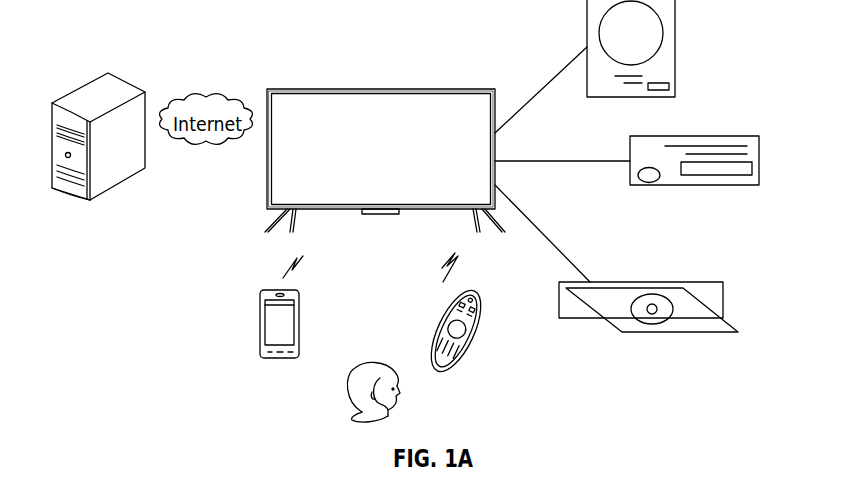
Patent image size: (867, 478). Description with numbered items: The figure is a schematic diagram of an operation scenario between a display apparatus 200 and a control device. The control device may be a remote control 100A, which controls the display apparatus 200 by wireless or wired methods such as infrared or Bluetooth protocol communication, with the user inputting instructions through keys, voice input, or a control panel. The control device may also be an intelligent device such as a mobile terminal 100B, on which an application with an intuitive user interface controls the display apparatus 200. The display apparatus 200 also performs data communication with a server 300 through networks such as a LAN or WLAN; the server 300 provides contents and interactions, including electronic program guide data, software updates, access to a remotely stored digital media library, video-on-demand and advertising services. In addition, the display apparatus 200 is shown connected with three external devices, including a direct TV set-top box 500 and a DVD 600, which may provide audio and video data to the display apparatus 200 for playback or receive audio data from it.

The server 300 is at (127, 80).
The display apparatus 200 is at (425, 89).
The direct TV set-top box 500 is at (730, 136).
The DVD 600 is at (697, 282).
The remote control 100A is at (478, 288).
The mobile terminal 100B is at (299, 313).